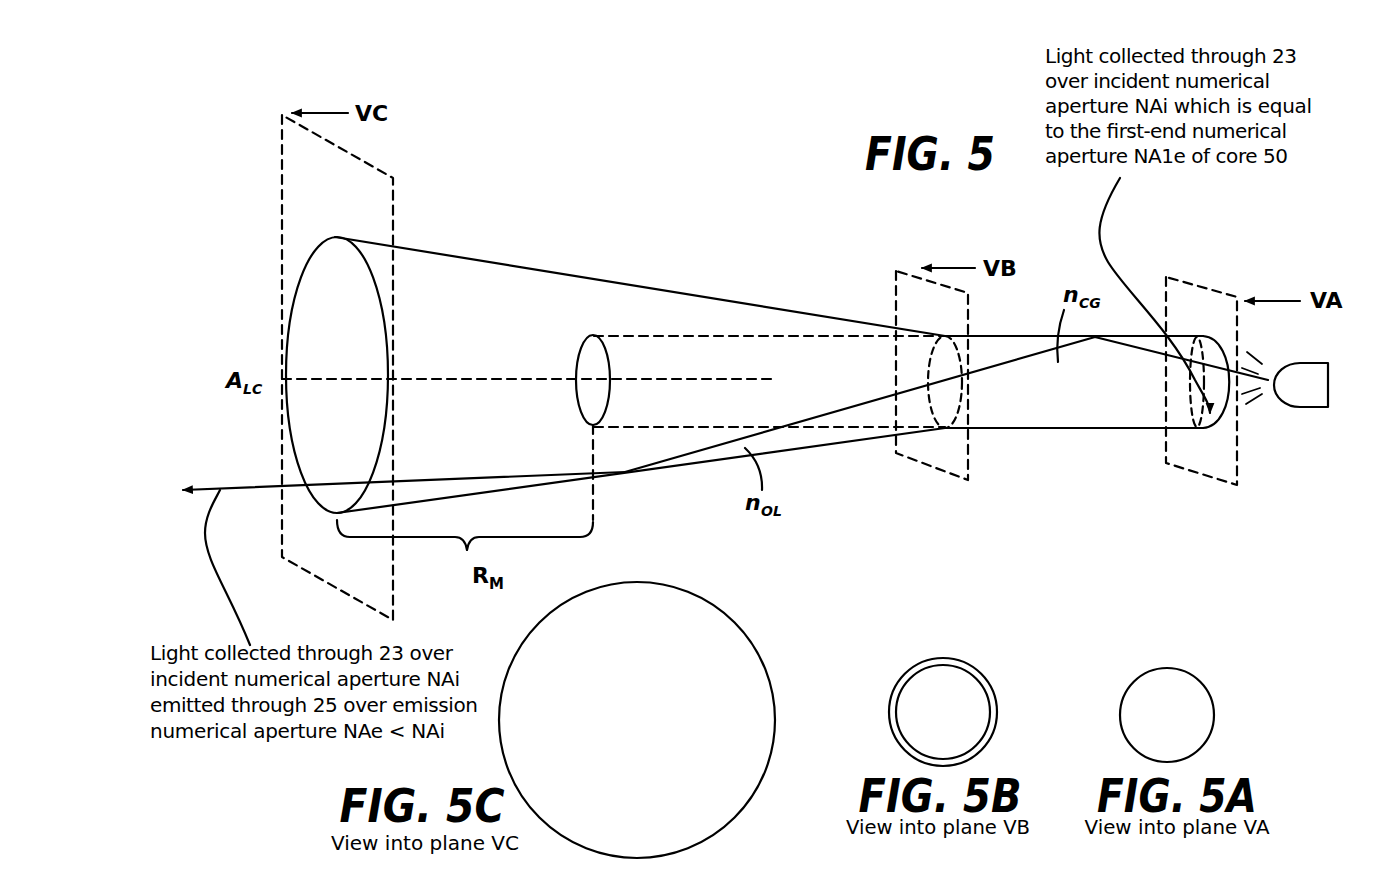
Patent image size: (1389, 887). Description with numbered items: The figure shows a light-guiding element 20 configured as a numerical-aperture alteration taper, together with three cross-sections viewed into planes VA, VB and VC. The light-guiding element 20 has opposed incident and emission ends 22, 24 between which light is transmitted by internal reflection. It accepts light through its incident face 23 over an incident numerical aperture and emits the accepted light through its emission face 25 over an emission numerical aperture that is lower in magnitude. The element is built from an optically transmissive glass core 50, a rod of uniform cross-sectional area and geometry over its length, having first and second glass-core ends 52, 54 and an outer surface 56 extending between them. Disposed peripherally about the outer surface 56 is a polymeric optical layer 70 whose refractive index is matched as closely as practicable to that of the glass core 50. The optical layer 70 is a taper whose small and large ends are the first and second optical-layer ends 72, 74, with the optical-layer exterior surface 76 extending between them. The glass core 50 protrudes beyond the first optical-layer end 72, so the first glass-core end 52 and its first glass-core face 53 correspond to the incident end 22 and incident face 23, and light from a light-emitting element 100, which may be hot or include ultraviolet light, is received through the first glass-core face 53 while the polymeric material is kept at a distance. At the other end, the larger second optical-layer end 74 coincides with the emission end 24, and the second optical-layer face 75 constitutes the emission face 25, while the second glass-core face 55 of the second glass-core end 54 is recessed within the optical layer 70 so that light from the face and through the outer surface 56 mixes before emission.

In FIG. 5, the light-guiding element 20 is at (757, 197).
In FIG. 5C, the light-guiding element 20 is at (528, 635).
In FIG. 5B, the light-guiding element 20 is at (897, 680).
In FIG. 5A, the light-guiding element 20 is at (1130, 682).
In FIG. 5, the incident end 22 is at (1197, 440).
In FIG. 5, the incident face 23 is at (1208, 352).
In FIG. 5, the emission end 24 is at (377, 283).
In FIG. 5, the emission face 25 is at (330, 422).
In FIG. 5, the glass core 50 is at (740, 390).
In FIG. 5B, the glass core 50 is at (957, 727).
In FIG. 5A, the glass core 50 is at (1181, 730).
In FIG. 5, the first glass-core end 52 is at (1183, 418).
In FIG. 5, the first glass-core face 53 is at (1238, 406).
In FIG. 5, the second glass-core end 54 is at (618, 350).
In FIG. 5, the second glass-core face 55 is at (593, 370).
In FIG. 5, the outer surface 56 is at (1097, 428).
In FIG. 5, the optical layer 70 is at (510, 292).
In FIG. 5C, the optical layer 70 is at (713, 660).
In FIG. 5B, the optical layer 70 is at (953, 660).
In FIG. 5, the first optical-layer end 72 is at (920, 328).
In FIG. 5, the second optical-layer end 74 is at (335, 237).
In FIG. 5, the second optical-layer face 75 is at (320, 308).
In FIG. 5, the optical-layer exterior surface 76 is at (470, 262).
In FIG. 5, the light-emitting element 100 is at (1290, 390).